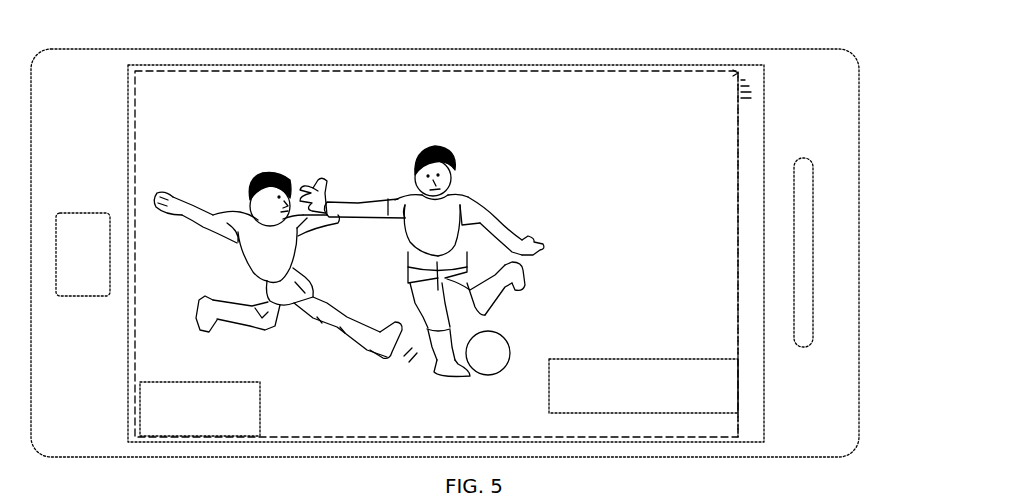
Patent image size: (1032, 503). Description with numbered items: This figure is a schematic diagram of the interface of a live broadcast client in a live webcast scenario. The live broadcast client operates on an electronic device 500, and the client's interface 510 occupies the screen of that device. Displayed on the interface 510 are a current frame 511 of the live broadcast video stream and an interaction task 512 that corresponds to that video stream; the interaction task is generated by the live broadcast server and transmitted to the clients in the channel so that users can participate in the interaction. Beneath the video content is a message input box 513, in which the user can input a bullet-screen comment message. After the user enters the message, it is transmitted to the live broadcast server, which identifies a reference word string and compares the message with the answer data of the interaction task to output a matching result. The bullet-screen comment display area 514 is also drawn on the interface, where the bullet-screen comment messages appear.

The electronic device 500 is at (850, 322).
The interface 510 is at (135, 137).
The current frame 511 is at (305, 83).
The interaction task 512 is at (200, 409).
The message input box 513 is at (643, 386).
The bullet-screen comment display area 514 is at (645, 78).